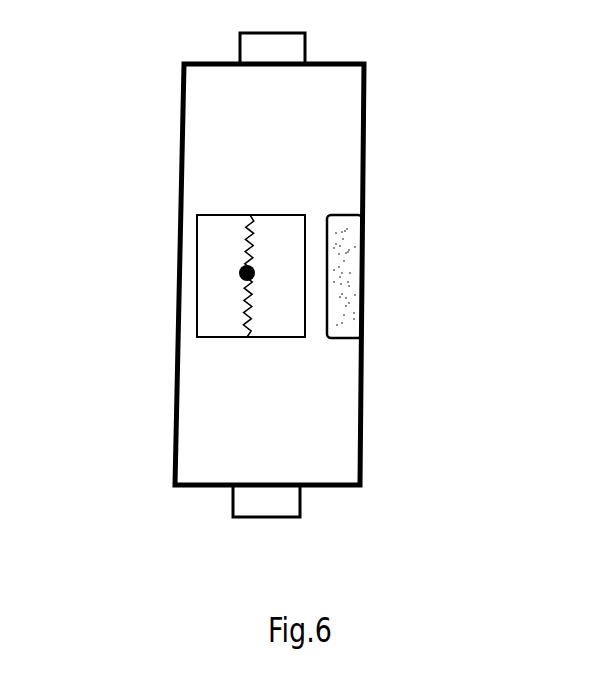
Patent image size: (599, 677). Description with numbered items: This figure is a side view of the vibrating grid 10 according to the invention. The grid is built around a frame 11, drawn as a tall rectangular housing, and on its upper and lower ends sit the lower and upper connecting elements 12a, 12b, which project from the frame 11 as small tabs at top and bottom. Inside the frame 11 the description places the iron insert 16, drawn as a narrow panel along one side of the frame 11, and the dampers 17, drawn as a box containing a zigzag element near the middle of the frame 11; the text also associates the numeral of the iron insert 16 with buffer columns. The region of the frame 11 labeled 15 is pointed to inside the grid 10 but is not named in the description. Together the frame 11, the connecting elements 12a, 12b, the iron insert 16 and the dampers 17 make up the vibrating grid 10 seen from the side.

The vibrating grid 10 is at (157, 73).
The frame 11 is at (378, 110).
The connecting element 12a is at (315, 46).
The connecting element 12b is at (313, 502).
The interior chamber 15 is at (308, 165).
The iron insert 16 is at (344, 301).
The dampers 17 is at (188, 283).